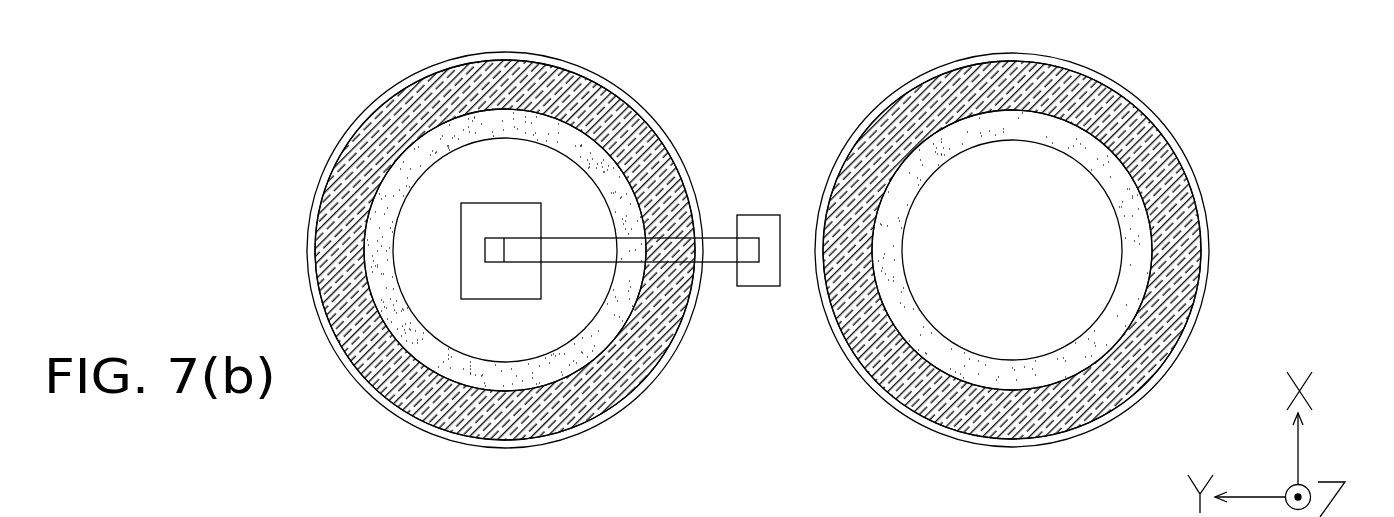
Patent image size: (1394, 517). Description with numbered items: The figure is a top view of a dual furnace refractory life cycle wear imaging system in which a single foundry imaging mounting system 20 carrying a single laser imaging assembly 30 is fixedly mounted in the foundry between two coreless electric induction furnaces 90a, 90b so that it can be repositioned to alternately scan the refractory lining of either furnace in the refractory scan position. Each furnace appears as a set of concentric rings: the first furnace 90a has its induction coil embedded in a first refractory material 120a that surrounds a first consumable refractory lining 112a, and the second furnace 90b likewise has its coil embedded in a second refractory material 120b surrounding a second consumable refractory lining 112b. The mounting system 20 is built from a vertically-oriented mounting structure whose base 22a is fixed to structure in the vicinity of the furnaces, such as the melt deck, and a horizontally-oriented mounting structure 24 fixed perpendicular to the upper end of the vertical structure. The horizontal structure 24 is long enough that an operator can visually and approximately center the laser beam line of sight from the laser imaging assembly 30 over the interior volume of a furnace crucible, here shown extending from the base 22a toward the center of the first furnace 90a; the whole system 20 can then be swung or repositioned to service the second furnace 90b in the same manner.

The foundry imaging mounting system 20 is at (645, 235).
The base 22a is at (768, 280).
The horizontally-oriented mounting structure 24 is at (718, 258).
The laser imaging assembly 30 is at (507, 217).
The induction furnace 90a is at (468, 240).
The induction furnace 90b is at (1086, 239).
The first consumable refractory lining 112a is at (598, 155).
The second consumable refractory lining 112b is at (1093, 158).
The first refractory material 120a is at (590, 93).
The second refractory material 120b is at (1082, 100).